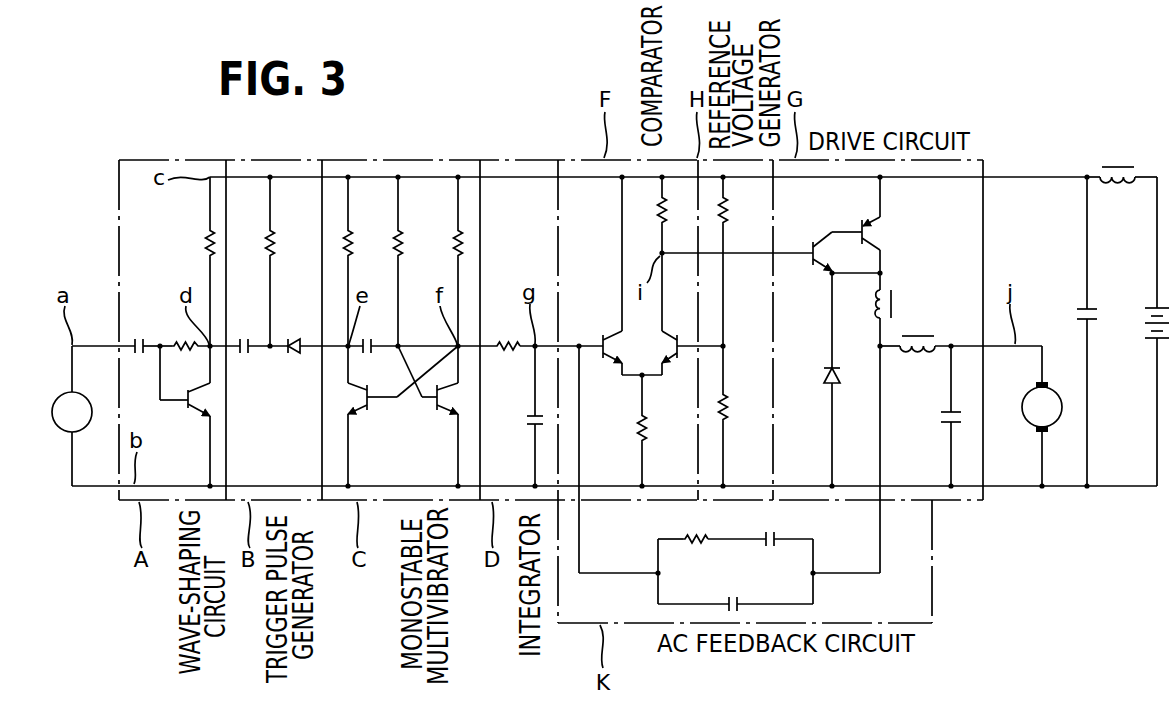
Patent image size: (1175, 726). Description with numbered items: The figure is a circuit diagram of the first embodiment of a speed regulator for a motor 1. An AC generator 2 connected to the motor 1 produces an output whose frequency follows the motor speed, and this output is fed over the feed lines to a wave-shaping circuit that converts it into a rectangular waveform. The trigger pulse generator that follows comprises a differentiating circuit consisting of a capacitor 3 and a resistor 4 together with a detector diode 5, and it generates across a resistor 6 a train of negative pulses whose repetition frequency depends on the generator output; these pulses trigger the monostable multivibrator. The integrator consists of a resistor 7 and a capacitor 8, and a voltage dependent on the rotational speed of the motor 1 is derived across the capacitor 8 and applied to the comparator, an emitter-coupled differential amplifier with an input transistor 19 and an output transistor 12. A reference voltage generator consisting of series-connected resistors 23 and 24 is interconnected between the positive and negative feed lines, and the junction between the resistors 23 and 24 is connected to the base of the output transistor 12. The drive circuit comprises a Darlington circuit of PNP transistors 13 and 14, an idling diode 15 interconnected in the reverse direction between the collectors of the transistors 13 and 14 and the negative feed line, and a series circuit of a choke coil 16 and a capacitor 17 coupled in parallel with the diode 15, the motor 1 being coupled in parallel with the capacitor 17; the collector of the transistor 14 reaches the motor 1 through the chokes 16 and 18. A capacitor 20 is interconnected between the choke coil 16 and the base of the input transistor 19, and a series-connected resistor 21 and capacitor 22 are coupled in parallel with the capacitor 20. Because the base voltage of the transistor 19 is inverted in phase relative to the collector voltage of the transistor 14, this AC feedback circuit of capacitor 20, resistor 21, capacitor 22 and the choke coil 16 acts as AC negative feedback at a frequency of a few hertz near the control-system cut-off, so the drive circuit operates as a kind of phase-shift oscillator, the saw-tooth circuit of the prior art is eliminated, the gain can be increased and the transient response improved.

The motor 1 is at (1049, 383).
The AC generator 2 is at (61, 428).
The capacitor 3 is at (244, 352).
The resistor 4 is at (270, 237).
The diode 5 is at (292, 352).
The resistor 6 is at (350, 235).
The resistor 7 is at (509, 352).
The capacitor 8 is at (527, 421).
The output transistor 12 is at (677, 362).
The PNP transistor 13 is at (826, 272).
The PNP transistor 14 is at (882, 229).
The idling diode 15 is at (828, 392).
The choke coil 16 is at (892, 305).
The capacitor 17 is at (941, 417).
The choke coil 18 is at (922, 352).
The input transistor 19 is at (608, 336).
The capacitor 20 is at (733, 600).
The resistor 21 is at (693, 546).
The capacitor 22 is at (770, 547).
The resistor 23 is at (725, 207).
The resistor 24 is at (726, 408).